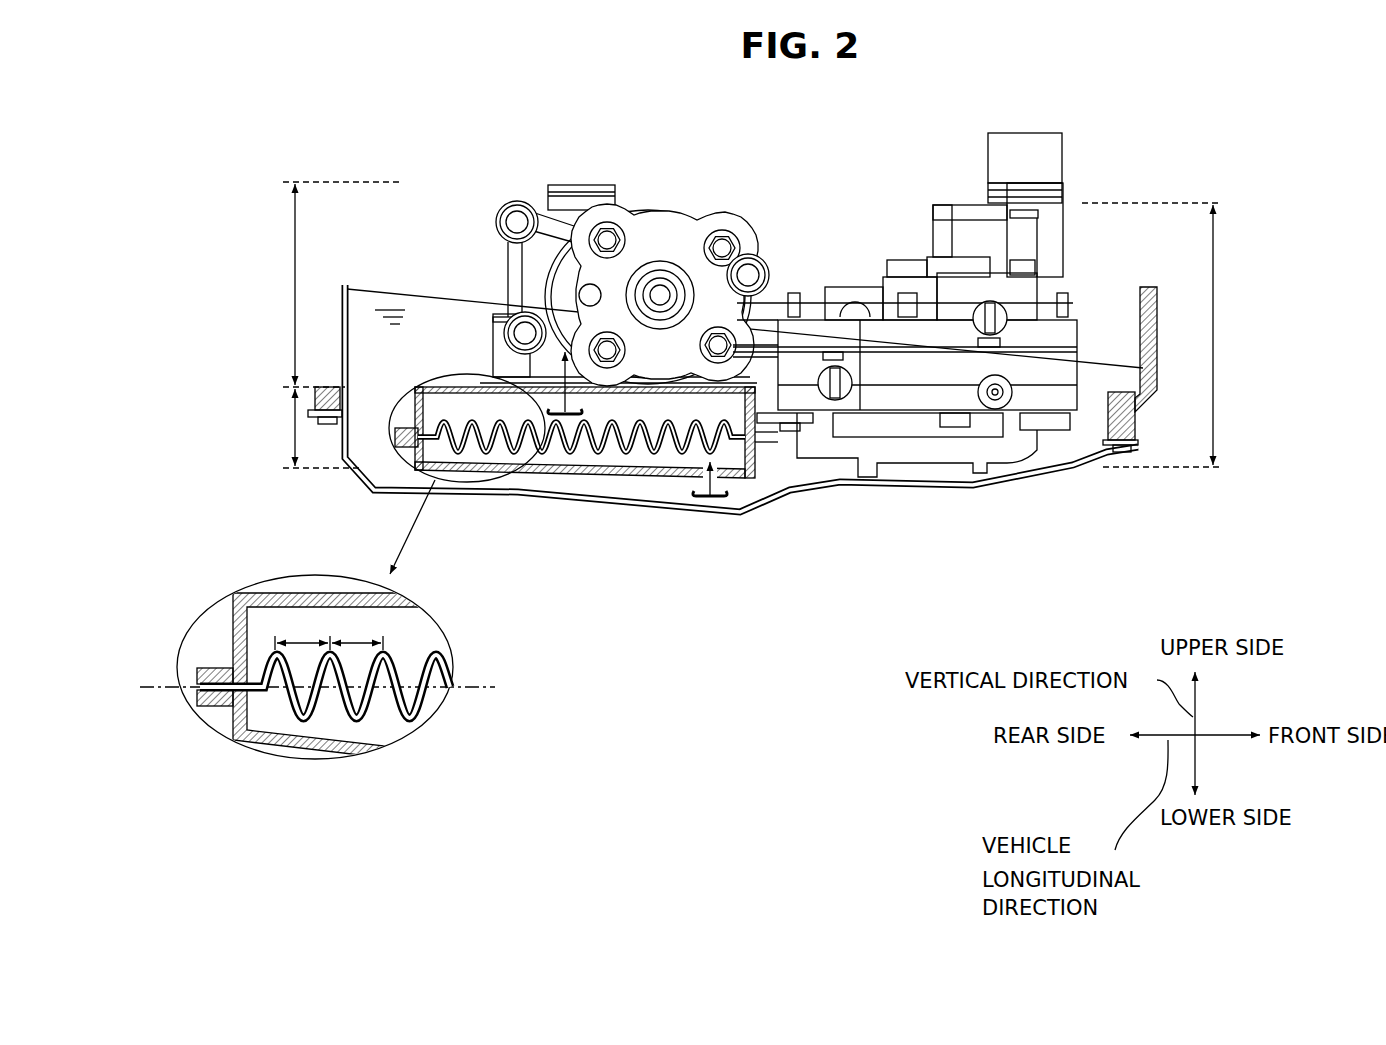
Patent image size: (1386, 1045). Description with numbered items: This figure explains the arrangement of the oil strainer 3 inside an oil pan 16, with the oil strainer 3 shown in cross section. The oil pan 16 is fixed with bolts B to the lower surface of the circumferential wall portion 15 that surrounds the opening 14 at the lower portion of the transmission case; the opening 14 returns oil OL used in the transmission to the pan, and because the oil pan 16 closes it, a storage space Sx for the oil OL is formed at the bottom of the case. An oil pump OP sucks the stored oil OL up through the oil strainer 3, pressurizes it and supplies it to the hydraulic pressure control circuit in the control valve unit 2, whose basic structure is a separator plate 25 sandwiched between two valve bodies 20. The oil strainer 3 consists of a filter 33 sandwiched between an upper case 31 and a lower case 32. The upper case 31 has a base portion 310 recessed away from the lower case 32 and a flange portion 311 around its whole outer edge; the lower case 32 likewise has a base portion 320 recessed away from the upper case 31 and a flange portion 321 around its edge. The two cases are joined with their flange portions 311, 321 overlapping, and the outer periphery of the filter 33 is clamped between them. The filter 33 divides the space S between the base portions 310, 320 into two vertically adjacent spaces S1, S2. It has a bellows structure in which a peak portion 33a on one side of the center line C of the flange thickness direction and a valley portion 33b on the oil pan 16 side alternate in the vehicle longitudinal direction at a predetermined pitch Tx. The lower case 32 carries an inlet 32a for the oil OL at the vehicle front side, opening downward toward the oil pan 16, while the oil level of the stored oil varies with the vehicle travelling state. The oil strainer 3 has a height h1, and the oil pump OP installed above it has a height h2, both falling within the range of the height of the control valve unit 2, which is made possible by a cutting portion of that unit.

The control valve unit 2 is at (928, 305).
The oil strainer 3 is at (486, 531).
The opening 14 is at (1137, 425).
The circumferential wall portion 15 is at (1150, 391).
The oil pan 16 is at (1055, 475).
The valve body 20 is at (1075, 330).
The separator plate 25 is at (1078, 350).
The upper case 31 is at (284, 584).
The base portion 310 is at (262, 597).
The flange portion 311 is at (230, 672).
The lower case 32 is at (265, 771).
The base portion 320 is at (263, 740).
The flange portion 321 is at (195, 748).
The inlet 32a is at (700, 482).
The filter 33 is at (440, 656).
The peak portion 33a is at (397, 667).
The valley portion 33b is at (403, 715).
The oil pump OP is at (660, 206).
The oil OL is at (720, 498).
The bolt B is at (328, 426).
The storage space Sx is at (947, 477).
The space S is at (520, 640).
The space S1 is at (452, 655).
The space S2 is at (440, 703).
The center line C is at (305, 686).
The pitch Tx is at (329, 630).
The height h1 is at (308, 428).
The height h2 is at (329, 284).